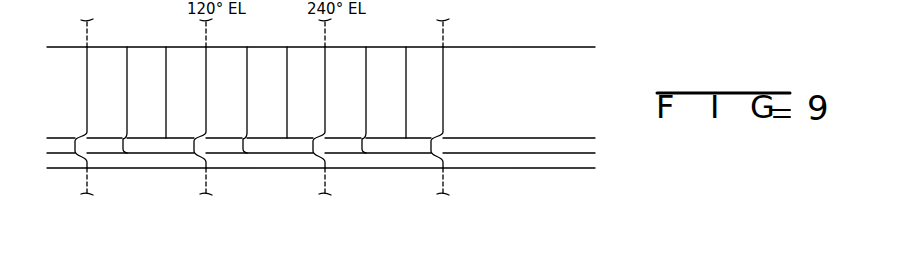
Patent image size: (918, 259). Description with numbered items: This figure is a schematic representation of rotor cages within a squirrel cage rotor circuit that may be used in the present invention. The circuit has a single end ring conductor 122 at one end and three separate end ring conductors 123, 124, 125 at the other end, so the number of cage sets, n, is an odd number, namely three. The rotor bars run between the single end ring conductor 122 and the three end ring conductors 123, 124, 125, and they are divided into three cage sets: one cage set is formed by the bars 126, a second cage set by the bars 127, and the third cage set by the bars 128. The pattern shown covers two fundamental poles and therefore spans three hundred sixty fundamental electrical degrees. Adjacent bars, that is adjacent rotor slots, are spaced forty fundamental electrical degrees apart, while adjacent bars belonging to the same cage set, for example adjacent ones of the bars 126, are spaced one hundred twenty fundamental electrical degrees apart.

The single end ring conductor 122 is at (545, 47).
The end ring conductor 123 is at (575, 138).
The end ring conductor 124 is at (595, 153).
The end ring conductor 125 is at (577, 168).
The bars 126 is at (87, 101).
The bars 127 is at (127, 62).
The bars 128 is at (166, 118).